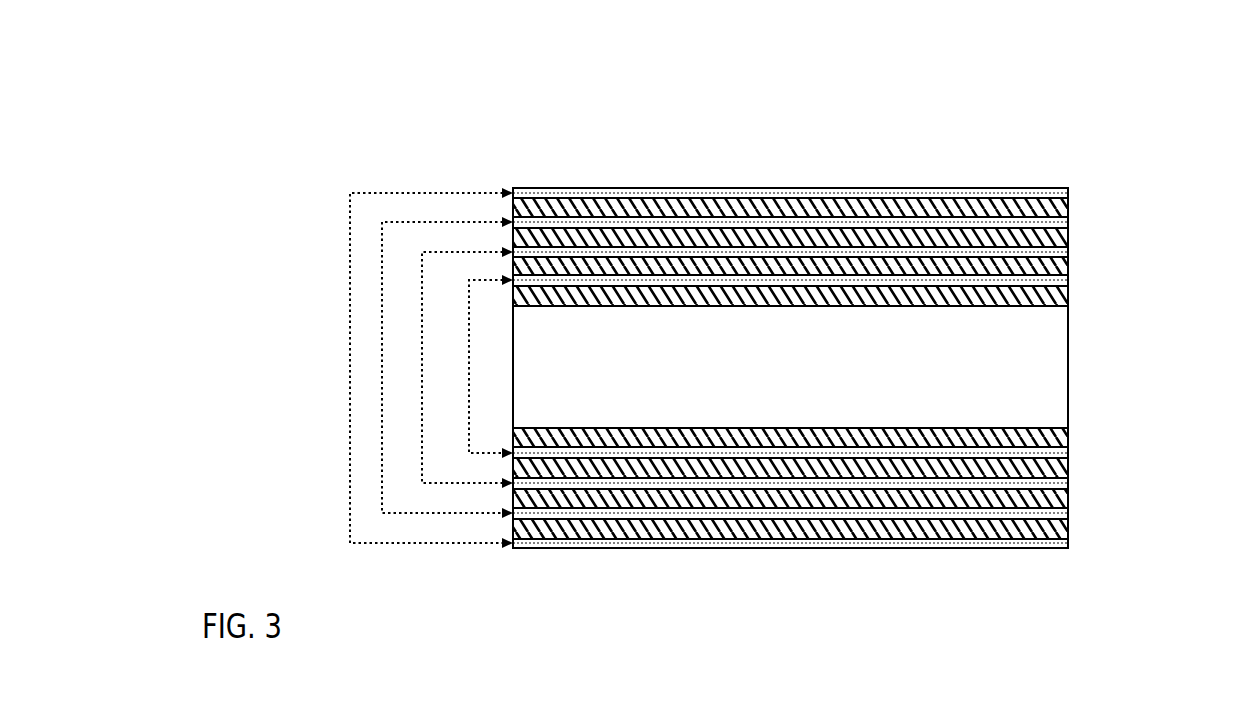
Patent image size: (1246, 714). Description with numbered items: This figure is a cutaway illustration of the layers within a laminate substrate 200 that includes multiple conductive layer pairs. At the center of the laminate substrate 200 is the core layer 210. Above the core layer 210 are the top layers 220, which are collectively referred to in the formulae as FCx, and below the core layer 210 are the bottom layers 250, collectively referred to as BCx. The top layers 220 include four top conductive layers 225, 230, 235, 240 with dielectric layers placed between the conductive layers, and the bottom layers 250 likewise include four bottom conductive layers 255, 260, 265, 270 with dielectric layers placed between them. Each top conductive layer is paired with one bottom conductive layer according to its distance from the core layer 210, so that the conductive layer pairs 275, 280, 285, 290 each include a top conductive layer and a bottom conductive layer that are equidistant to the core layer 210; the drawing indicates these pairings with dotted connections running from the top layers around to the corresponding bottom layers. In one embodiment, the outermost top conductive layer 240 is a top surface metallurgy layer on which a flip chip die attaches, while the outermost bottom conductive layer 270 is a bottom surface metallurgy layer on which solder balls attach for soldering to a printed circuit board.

The laminate substrate 200 is at (567, 80).
The core layer 210 is at (807, 389).
The top layers 220 is at (1127, 291).
The top conductive layer 225 is at (1068, 278).
The top conductive layer 230 is at (1068, 245).
The top conductive layer 235 is at (1068, 218).
The top conductive layer 240 is at (1068, 187).
The bottom layers 250 is at (1127, 548).
The bottom conductive layer 255 is at (1068, 448).
The bottom conductive layer 260 is at (1068, 481).
The bottom conductive layer 265 is at (1068, 508).
The bottom conductive layer 270 is at (1068, 538).
The conductive layer pair 275 is at (481, 280).
The conductive layer pair 280 is at (442, 251).
The conductive layer pair 285 is at (408, 221).
The conductive layer pair 290 is at (376, 192).